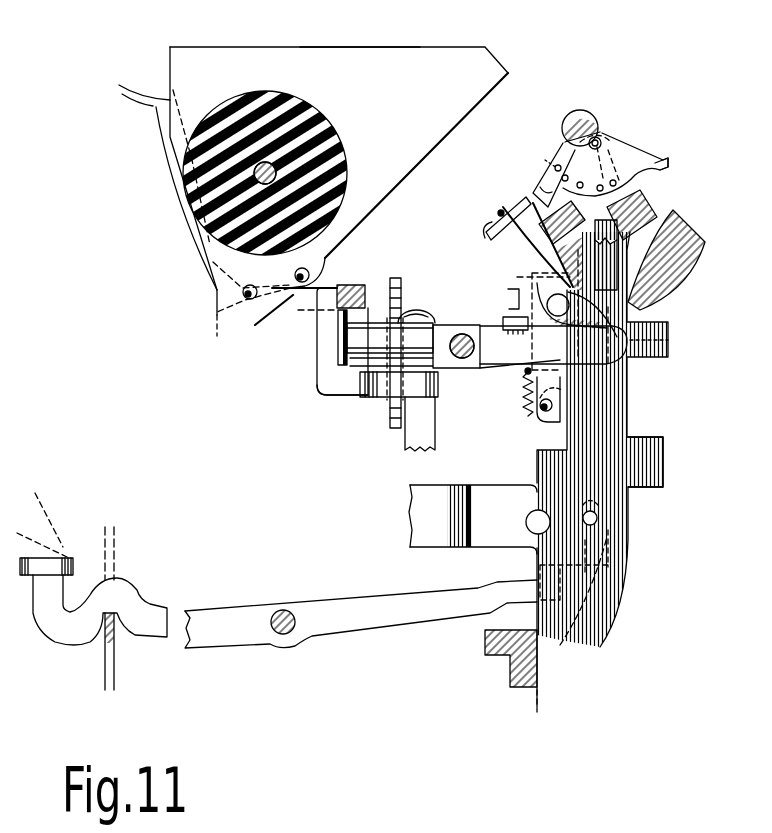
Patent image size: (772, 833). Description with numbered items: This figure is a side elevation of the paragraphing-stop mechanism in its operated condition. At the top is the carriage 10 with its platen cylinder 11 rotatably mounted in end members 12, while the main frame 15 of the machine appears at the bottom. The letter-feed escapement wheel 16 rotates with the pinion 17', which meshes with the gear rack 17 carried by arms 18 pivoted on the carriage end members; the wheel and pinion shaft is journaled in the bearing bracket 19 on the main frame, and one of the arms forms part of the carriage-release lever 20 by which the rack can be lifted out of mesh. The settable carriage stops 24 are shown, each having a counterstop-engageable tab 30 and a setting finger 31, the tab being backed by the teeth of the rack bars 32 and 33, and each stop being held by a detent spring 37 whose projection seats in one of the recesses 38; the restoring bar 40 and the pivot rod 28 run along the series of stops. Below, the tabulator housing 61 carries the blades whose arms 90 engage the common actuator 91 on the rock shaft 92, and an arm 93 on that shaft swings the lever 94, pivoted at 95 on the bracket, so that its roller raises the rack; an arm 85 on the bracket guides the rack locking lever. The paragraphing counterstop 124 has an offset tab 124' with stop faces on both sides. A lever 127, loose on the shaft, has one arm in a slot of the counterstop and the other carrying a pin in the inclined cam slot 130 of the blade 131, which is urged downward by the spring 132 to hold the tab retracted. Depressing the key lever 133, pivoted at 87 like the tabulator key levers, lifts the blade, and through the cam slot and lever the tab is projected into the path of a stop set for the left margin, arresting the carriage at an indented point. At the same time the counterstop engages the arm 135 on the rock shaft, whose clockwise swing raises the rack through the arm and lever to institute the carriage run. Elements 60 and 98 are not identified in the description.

The carriage 10 is at (366, 45).
The platen cylinder 11 is at (339, 136).
The end members 12 is at (228, 56).
The main frame 15 is at (498, 656).
The escapement wheel 16 is at (400, 283).
The gear rack 17 is at (333, 328).
The pinion 17' is at (342, 381).
The arms 18 is at (295, 302).
The bearing bracket 19 is at (423, 308).
The carriage-release lever 20 is at (160, 121).
The stops 24 is at (630, 152).
The pivot rod 28 is at (601, 139).
The counterstop-engageable tab 30 is at (550, 180).
The stop-setting or restoring finger 31 is at (669, 162).
The rack bar 32 is at (533, 200).
The rack bar 33 is at (643, 202).
The detent spring 37 is at (612, 152).
The recesses 38 is at (620, 182).
The restoring bar 40 is at (569, 118).
The frame tab 60 is at (666, 465).
The tabulator housing 61 is at (640, 402).
The arm 85 is at (438, 384).
The pivot 87 is at (297, 619).
The arm 90 is at (505, 320).
The actuator 91 is at (510, 290).
The rock shaft 92 is at (535, 330).
The arm 93 is at (572, 308).
The lever 94 is at (488, 360).
The pivot 95 is at (450, 347).
The curved guide 98 is at (676, 262).
The paragraphing counterstop 124 is at (482, 218).
The tab 124' is at (525, 178).
The lever 127 is at (512, 258).
The inclined cam slot 130 is at (544, 426).
The blade 131 is at (560, 470).
The spring 132 is at (524, 397).
The key lever 133 is at (431, 596).
The arm 135 is at (502, 237).